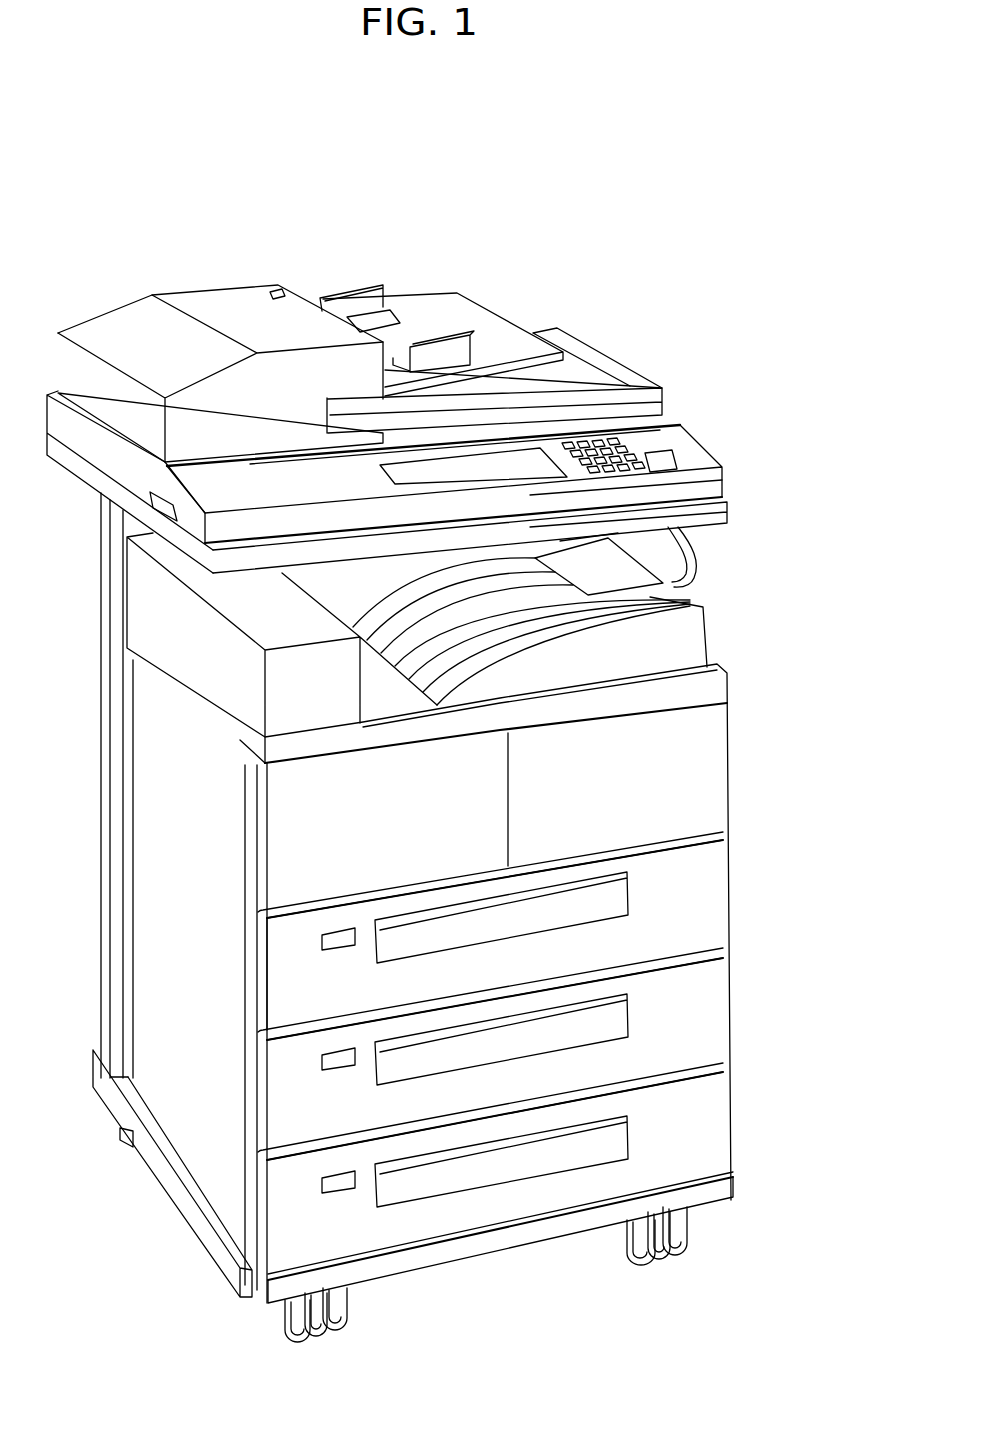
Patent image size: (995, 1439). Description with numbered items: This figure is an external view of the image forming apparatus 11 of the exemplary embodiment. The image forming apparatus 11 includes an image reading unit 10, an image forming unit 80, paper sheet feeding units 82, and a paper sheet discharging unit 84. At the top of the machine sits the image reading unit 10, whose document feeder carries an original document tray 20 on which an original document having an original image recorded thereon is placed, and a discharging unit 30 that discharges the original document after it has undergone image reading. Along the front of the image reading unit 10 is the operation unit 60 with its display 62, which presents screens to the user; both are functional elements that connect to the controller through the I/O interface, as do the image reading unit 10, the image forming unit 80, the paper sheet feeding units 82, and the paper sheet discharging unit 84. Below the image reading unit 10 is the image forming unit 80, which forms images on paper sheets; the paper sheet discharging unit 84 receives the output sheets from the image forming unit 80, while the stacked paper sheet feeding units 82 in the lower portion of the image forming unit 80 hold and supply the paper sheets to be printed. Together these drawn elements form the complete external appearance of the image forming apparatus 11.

The image reading unit 10 is at (230, 265).
The image forming apparatus 11 is at (378, 178).
The original document tray 20 is at (474, 301).
The discharging unit 30 is at (616, 372).
The operation unit 60 is at (682, 442).
The display 62 is at (378, 471).
The image forming unit 80 is at (745, 768).
The paper sheet feeding units 82 is at (713, 862).
The paper sheet discharging unit 84 is at (637, 605).